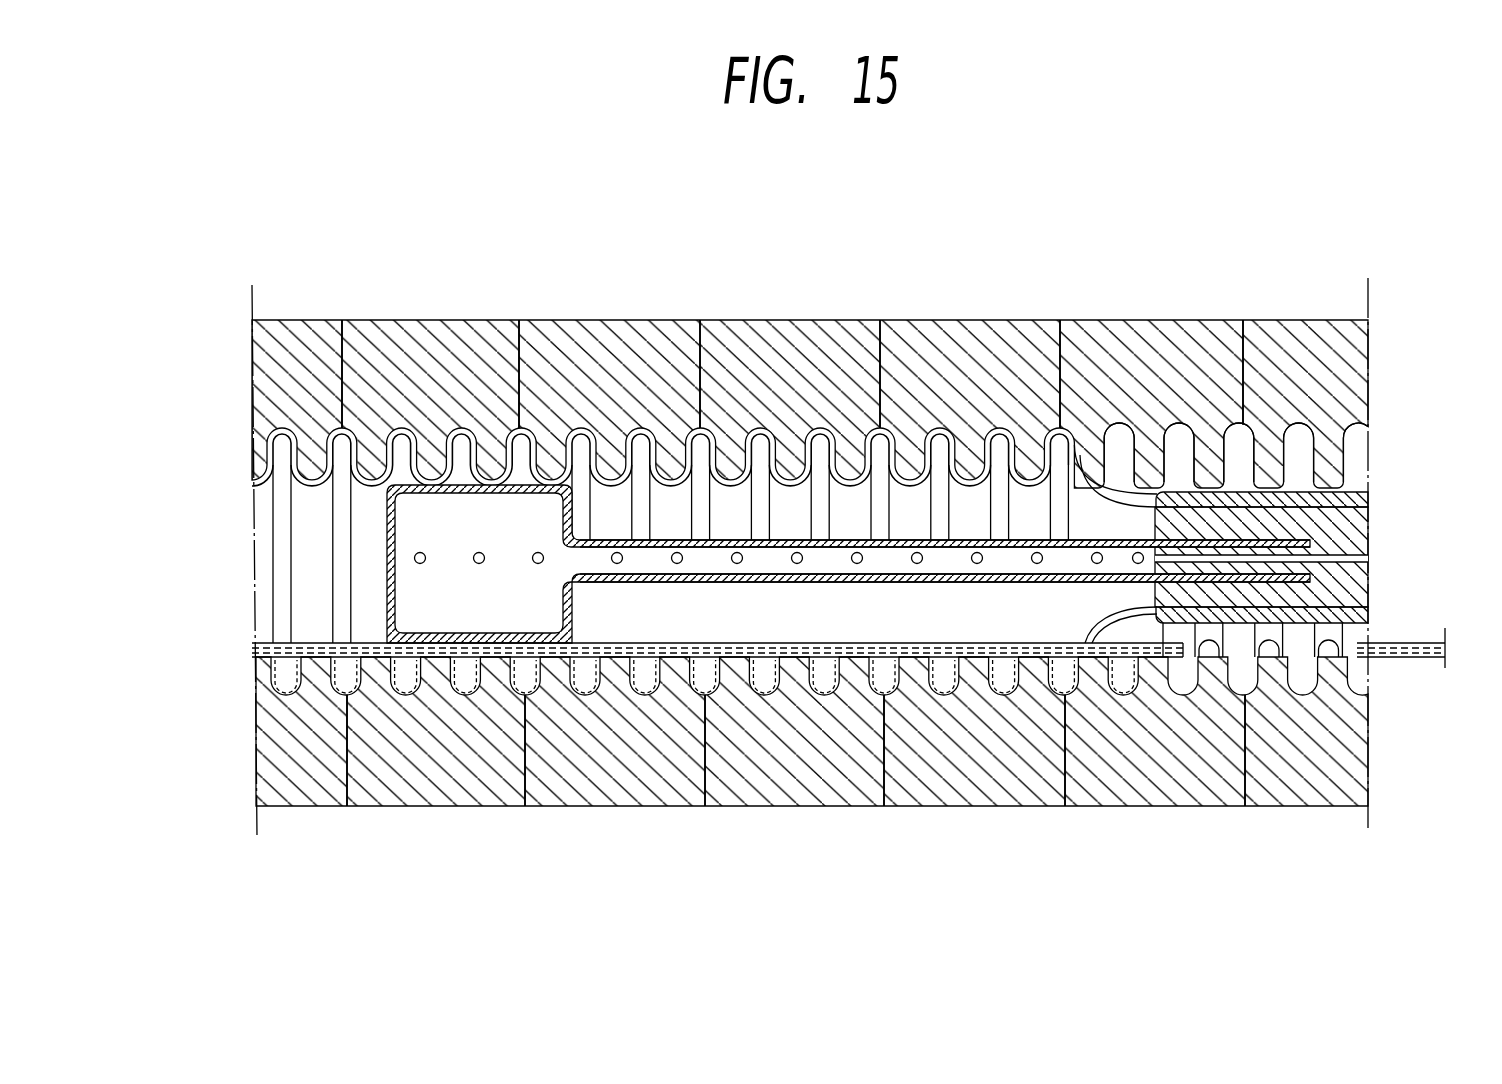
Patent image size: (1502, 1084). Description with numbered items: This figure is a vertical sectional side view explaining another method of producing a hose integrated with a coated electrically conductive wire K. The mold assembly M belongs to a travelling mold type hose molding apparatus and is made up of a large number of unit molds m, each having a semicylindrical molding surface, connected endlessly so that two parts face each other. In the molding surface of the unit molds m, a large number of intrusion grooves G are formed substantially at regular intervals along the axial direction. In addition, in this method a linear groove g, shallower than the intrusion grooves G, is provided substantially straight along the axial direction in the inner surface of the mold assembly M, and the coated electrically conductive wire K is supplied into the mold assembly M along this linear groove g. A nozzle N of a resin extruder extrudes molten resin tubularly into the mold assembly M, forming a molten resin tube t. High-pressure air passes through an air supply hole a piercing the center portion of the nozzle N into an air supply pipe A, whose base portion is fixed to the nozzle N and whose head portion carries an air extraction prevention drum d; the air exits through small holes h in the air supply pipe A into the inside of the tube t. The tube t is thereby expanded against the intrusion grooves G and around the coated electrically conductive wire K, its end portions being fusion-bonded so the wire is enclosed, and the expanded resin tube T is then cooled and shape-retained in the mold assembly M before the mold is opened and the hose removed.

The mold assembly M is at (1198, 292).
The unit mold m is at (596, 332).
The intrusion groove G is at (1357, 446).
The molten resin tube t is at (1117, 432).
The resin tube T is at (285, 520).
The nozzle N is at (1365, 522).
The air supply hole a is at (1370, 556).
The air extraction prevention drum d is at (467, 522).
The air supply pipe A is at (938, 556).
The small holes h is at (855, 552).
The coated electrically conductive wire K is at (262, 645).
The linear groove g is at (1338, 647).